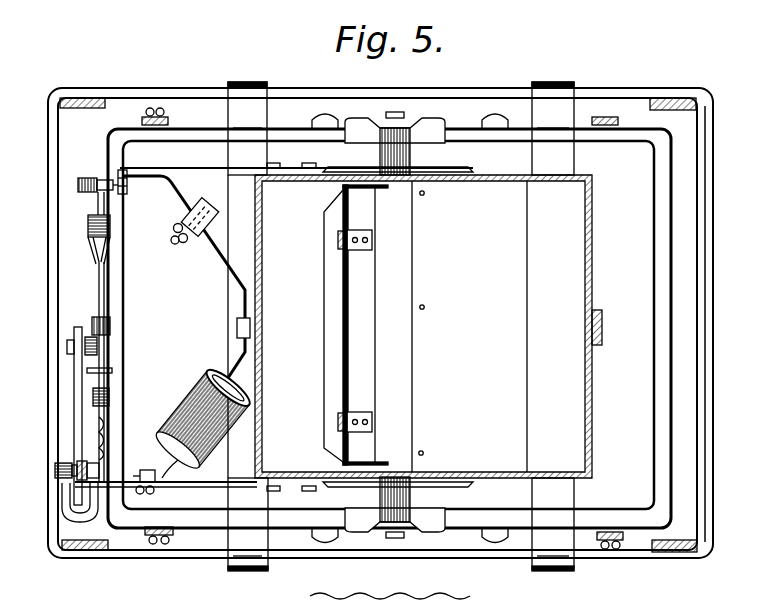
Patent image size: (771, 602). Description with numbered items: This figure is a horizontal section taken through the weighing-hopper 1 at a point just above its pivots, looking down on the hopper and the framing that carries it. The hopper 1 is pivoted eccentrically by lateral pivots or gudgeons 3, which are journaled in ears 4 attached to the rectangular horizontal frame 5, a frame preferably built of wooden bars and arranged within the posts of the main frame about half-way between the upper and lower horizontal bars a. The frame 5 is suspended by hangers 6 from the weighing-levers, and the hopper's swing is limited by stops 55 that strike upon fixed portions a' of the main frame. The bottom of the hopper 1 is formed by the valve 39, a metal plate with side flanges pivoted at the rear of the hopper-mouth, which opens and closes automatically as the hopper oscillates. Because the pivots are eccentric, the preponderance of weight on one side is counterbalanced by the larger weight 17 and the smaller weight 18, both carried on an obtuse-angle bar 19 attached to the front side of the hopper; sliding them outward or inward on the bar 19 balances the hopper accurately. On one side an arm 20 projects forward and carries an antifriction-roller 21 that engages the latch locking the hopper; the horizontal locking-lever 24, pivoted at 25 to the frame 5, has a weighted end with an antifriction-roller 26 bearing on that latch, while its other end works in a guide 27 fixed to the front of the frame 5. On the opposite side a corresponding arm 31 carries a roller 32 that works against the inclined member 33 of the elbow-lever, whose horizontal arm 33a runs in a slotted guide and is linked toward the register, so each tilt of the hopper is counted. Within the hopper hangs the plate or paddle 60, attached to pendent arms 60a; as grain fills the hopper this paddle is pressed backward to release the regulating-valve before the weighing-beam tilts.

The horizontal top and bottom bars a is at (379, 323).
The fixed portions of the main frame a' is at (418, 326).
The weighing-hopper 1 is at (259, 229).
The lateral pivots or gudgeons 3 is at (380, 162).
The ears 4 is at (432, 132).
The rectangular horizontal frame 5 is at (656, 168).
The hangers 6 is at (168, 122).
The larger weight 17 is at (203, 408).
The smaller weight 18 is at (203, 210).
The obtuse-angle bar 19 is at (224, 263).
The arm 20 is at (296, 318).
The antifriction-roller 21 is at (93, 169).
The locking-lever 24 is at (83, 372).
The pivot 25 is at (92, 326).
The antifriction-roller 26 is at (95, 226).
The guide 27 is at (110, 392).
The arm 31 is at (166, 485).
The roller 32 is at (98, 518).
The arm or member of the elbow-lever 33 is at (62, 476).
The horizontal arm of the elbow-lever 33a is at (78, 408).
The valve 39 is at (453, 326).
The stops 55 is at (602, 327).
The plate or paddle 60 is at (338, 337).
The arms 60a is at (322, 428).